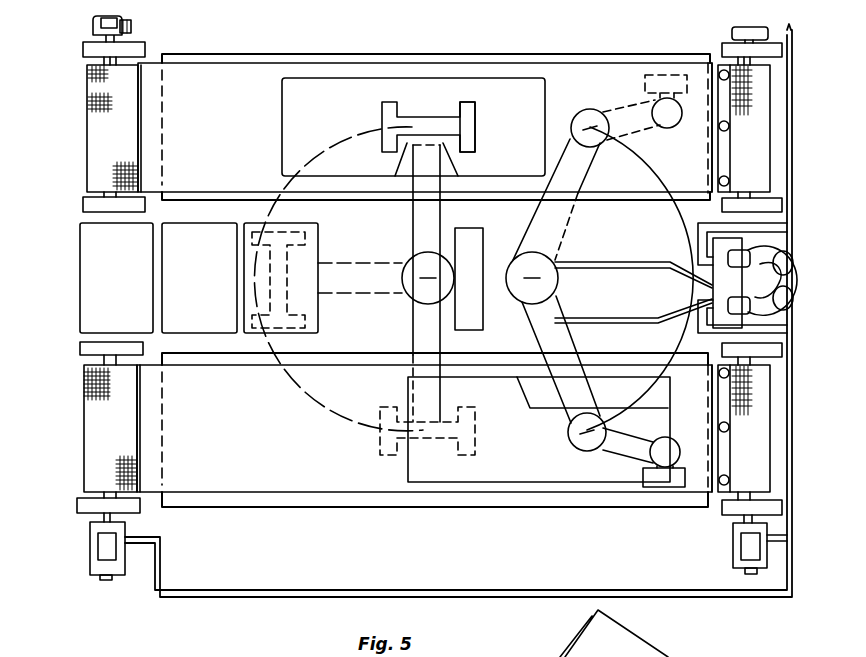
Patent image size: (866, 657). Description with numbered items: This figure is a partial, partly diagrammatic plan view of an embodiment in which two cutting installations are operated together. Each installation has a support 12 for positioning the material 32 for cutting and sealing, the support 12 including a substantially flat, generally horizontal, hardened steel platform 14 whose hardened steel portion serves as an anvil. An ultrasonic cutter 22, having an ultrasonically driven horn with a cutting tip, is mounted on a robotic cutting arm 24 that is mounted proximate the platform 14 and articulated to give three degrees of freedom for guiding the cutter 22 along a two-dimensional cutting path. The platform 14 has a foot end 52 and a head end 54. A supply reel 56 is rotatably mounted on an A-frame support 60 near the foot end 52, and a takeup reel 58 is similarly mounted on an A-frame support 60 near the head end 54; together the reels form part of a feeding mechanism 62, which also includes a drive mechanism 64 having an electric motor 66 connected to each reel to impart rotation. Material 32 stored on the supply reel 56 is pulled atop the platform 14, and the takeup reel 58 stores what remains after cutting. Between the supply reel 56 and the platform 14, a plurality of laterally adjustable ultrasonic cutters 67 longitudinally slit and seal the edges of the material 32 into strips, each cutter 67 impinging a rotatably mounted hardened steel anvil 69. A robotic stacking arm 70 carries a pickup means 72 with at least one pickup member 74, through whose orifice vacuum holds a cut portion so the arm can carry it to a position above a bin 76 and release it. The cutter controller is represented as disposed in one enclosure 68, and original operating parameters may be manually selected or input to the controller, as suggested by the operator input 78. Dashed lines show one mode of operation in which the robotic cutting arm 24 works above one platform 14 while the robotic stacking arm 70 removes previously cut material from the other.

The support 12 is at (290, 47).
The platform 14 is at (342, 52).
The ultrasonic cutter 22 is at (665, 500).
The robotic cutting arm 24 is at (555, 416).
The material 32 is at (153, 63).
The foot end 52 is at (707, 512).
The head end 54 is at (176, 50).
The supply reel 56 is at (770, 115).
The takeup reel 58 is at (85, 133).
The A-frame support 60 is at (83, 50).
The feeding mechanism 62 is at (90, 36).
The drive mechanism 64 is at (90, 25).
The electric motor 66 is at (130, 23).
The ultrasonic cutters 67 is at (729, 182).
The controller enclosure 68 is at (750, 321).
The hardened steel anvil 69 is at (707, 82).
The robotic stacking arm 70 is at (443, 177).
The pickup means 72 is at (448, 103).
The pickup member 74 is at (469, 104).
The bin 76 is at (248, 220).
The operator input 78 is at (793, 256).